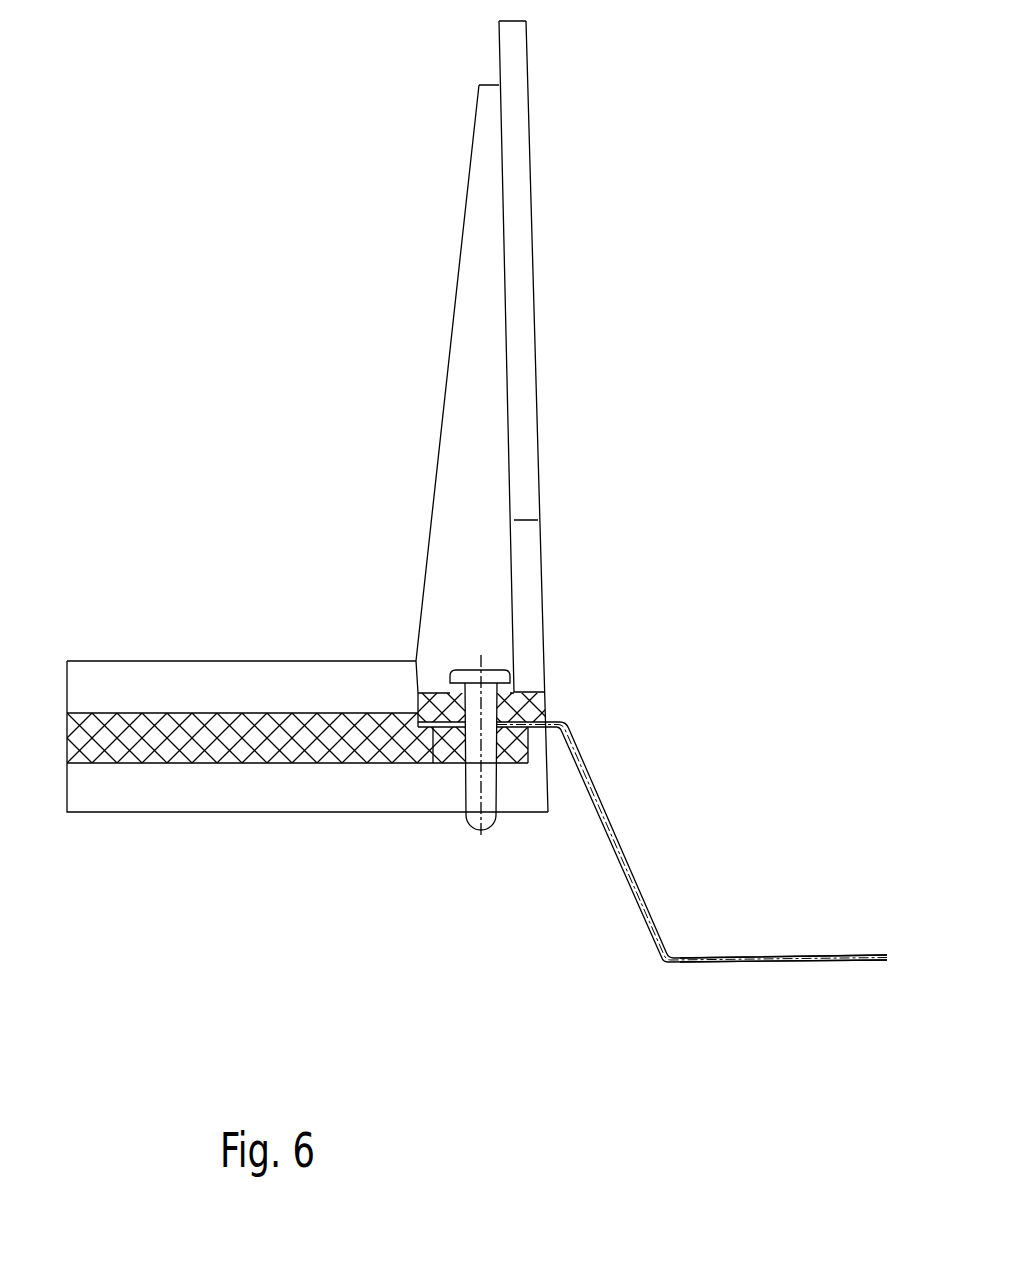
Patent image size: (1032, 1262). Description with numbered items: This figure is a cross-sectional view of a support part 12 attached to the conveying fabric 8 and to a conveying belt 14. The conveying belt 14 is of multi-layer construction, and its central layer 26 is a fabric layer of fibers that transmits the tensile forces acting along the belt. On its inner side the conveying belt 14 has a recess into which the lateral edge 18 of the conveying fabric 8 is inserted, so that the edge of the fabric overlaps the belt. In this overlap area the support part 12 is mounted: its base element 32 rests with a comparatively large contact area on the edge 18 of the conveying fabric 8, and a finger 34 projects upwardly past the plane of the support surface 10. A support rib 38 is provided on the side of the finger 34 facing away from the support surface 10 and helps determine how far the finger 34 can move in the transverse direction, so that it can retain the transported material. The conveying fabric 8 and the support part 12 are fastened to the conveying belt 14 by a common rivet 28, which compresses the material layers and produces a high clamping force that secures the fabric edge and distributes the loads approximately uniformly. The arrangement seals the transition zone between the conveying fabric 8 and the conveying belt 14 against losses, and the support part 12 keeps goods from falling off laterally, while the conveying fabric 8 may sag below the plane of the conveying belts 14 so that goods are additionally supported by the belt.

The conveying fabric 8 is at (822, 962).
The support surface 10 is at (775, 950).
The support part 12 is at (528, 125).
The conveying belt 14 is at (262, 660).
The lateral edge 18 is at (528, 700).
The central layer 26 is at (198, 745).
The rivet 28 is at (492, 787).
The base element 32 is at (545, 710).
The finger 34 is at (525, 392).
The support rib 38 is at (473, 470).